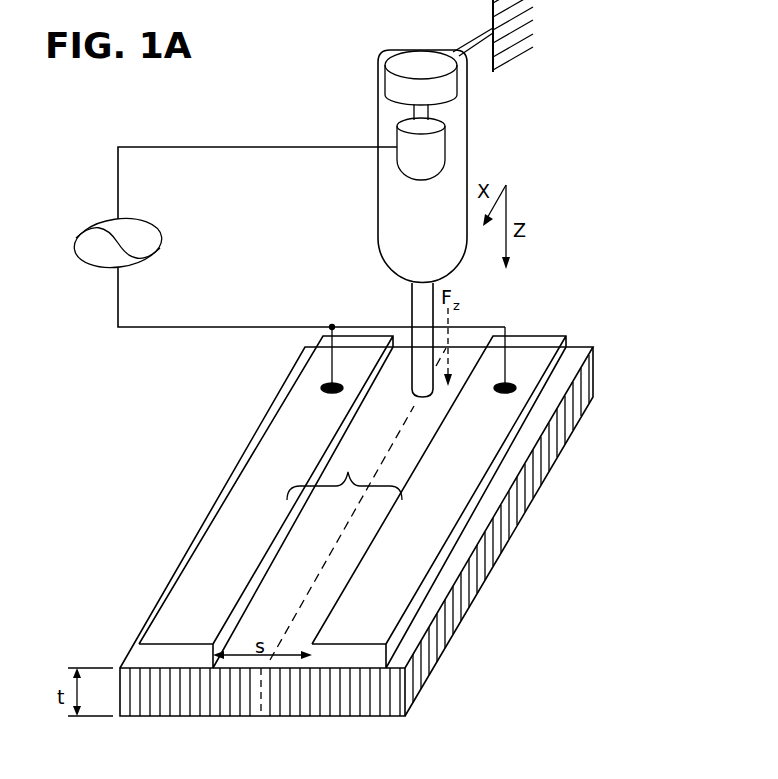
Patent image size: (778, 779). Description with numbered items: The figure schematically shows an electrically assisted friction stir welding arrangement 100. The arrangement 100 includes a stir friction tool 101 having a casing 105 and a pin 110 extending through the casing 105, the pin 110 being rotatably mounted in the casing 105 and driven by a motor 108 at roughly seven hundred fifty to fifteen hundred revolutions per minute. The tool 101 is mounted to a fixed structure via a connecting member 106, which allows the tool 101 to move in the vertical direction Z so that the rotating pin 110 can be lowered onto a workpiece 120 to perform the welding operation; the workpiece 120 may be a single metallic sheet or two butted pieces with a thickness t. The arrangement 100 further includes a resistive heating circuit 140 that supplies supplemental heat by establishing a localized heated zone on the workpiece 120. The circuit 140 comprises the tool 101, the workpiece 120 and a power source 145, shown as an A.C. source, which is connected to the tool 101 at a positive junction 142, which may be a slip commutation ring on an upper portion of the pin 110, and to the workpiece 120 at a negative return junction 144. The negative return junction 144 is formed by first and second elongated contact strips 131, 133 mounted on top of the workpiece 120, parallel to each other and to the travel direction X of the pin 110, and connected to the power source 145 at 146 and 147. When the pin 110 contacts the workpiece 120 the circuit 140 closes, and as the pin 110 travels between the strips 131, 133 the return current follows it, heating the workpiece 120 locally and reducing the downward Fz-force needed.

The electrically assisted friction stir welding arrangement 100 is at (148, 471).
The stir friction tool 101 is at (473, 156).
The casing 105 is at (468, 128).
The connecting member 106 is at (467, 47).
The motor 108 is at (398, 65).
The pin 110 is at (412, 328).
The workpiece 120 is at (557, 390).
The first elongated contact strip 131 is at (410, 583).
The second elongated contact strip 133 is at (202, 582).
The resistive heating circuit 140 is at (111, 170).
The positive junction 142 is at (403, 152).
The negative return junction 144 is at (345, 473).
The power source 145 is at (97, 257).
The connection of first strip to power source 146 is at (515, 386).
The connection of second strip to power source 147 is at (322, 390).